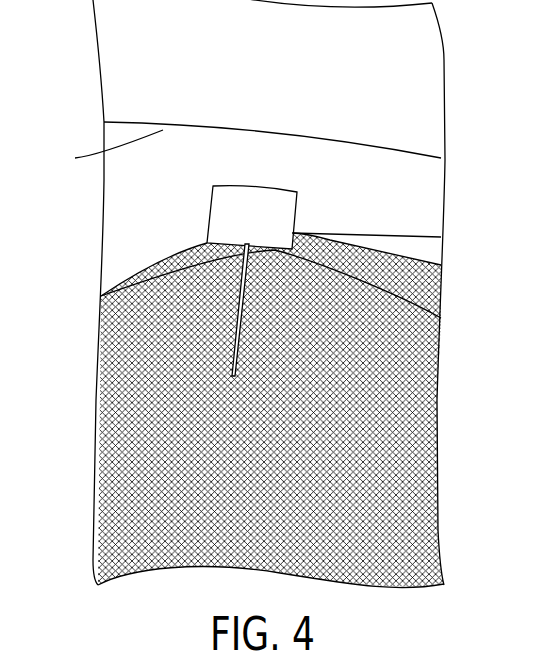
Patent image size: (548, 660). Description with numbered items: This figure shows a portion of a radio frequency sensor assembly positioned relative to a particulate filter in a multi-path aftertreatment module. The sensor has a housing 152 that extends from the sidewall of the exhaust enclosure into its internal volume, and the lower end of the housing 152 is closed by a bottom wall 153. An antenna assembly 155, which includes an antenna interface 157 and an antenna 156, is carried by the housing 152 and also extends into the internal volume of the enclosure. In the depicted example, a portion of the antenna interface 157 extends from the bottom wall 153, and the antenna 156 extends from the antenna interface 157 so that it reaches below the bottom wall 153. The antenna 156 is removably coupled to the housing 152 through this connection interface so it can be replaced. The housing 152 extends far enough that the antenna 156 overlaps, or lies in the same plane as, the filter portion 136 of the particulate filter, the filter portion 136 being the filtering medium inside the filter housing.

The housing 152 is at (405, 77).
The bottom wall 153 is at (103, 152).
The filter portion 136 is at (413, 440).
The antenna interface 157 is at (285, 203).
The antenna assembly 155 is at (298, 255).
The antenna 156 is at (101, 296).